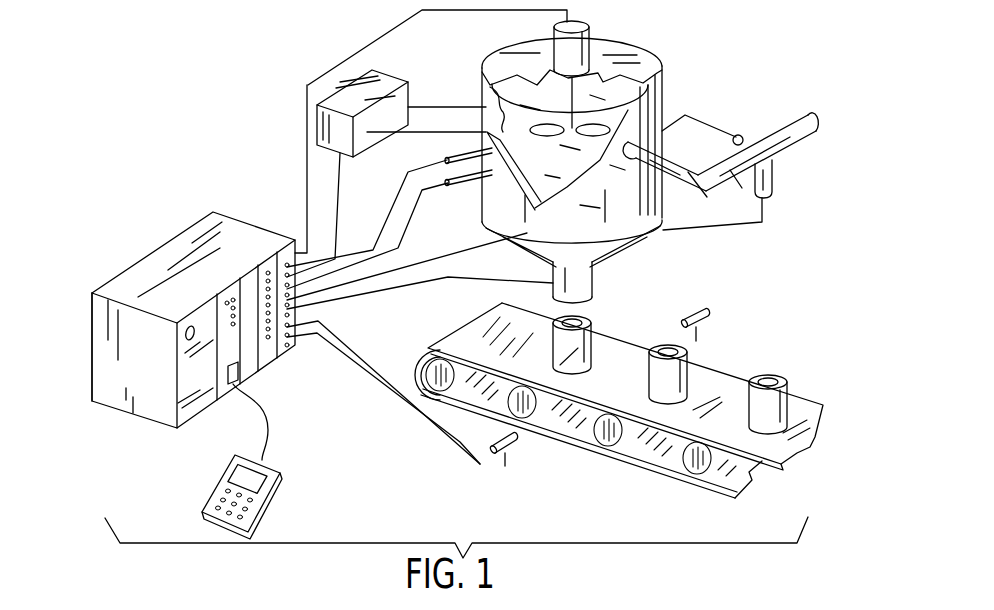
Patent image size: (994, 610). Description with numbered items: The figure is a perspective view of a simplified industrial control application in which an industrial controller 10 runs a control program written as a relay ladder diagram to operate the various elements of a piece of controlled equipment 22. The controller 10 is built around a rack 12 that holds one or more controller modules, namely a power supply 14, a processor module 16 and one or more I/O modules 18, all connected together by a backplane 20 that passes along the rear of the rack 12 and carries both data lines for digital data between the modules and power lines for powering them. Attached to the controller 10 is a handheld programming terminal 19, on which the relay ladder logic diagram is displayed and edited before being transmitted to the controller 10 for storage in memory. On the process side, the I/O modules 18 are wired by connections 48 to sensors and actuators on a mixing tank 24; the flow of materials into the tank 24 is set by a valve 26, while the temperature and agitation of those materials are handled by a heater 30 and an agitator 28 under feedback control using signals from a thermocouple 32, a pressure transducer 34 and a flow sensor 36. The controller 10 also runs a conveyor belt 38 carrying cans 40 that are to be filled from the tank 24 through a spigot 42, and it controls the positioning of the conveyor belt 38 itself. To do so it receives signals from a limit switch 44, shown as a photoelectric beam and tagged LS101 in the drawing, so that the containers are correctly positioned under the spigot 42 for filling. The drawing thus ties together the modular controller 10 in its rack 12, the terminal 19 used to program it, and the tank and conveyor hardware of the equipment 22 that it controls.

The industrial controller 10 is at (181, 224).
The rack 12 is at (160, 253).
The power supply 14 is at (197, 405).
The processor module 16 is at (232, 393).
The I/O modules 18 is at (280, 360).
The programming terminal 19 is at (215, 487).
The backplane 20 is at (83, 363).
The controlled equipment 22 is at (760, 61).
The mixing tank 24 is at (664, 104).
The valve 26 is at (774, 180).
The agitator 28 is at (588, 54).
The heater 30 is at (447, 107).
The thermocouple 32 is at (447, 158).
The pressure transducer 34 is at (450, 182).
The flow sensor 36 is at (738, 134).
The conveyor belt 38 is at (808, 402).
The cans 40 is at (688, 377).
The spigot 42 is at (595, 288).
The limit switch 44 is at (712, 316).
The signal wiring 48 is at (430, 297).
The limit switch LS101 is at (480, 464).